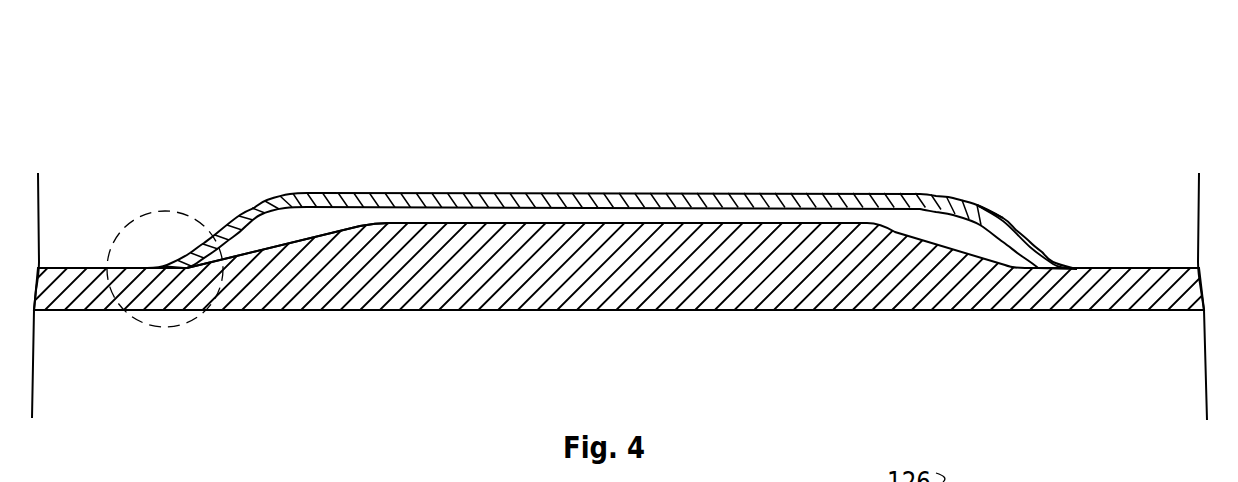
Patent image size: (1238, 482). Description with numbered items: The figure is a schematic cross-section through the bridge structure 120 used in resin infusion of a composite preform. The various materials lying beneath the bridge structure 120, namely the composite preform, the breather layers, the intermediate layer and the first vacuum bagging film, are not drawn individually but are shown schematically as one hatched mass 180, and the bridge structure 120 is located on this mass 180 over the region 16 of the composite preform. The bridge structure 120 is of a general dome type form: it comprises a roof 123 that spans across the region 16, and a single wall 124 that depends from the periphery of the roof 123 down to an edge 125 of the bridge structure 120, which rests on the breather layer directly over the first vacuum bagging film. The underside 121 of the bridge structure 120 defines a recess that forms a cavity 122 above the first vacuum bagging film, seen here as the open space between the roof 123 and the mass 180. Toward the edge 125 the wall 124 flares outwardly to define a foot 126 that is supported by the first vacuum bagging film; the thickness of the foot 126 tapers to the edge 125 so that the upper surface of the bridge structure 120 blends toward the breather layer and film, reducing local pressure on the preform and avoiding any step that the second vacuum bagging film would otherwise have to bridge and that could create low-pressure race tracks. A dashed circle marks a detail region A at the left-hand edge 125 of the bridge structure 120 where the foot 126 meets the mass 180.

The region 16 is at (737, 287).
The bridge structure 120 is at (619, 162).
The underside 121 is at (513, 195).
The cavity 122 is at (309, 223).
The roof 123 is at (718, 195).
The wall 124 is at (1020, 229).
The edge 125 is at (1103, 270).
The foot 126 is at (1054, 260).
The mass 180 is at (422, 319).
The detail region A is at (182, 334).